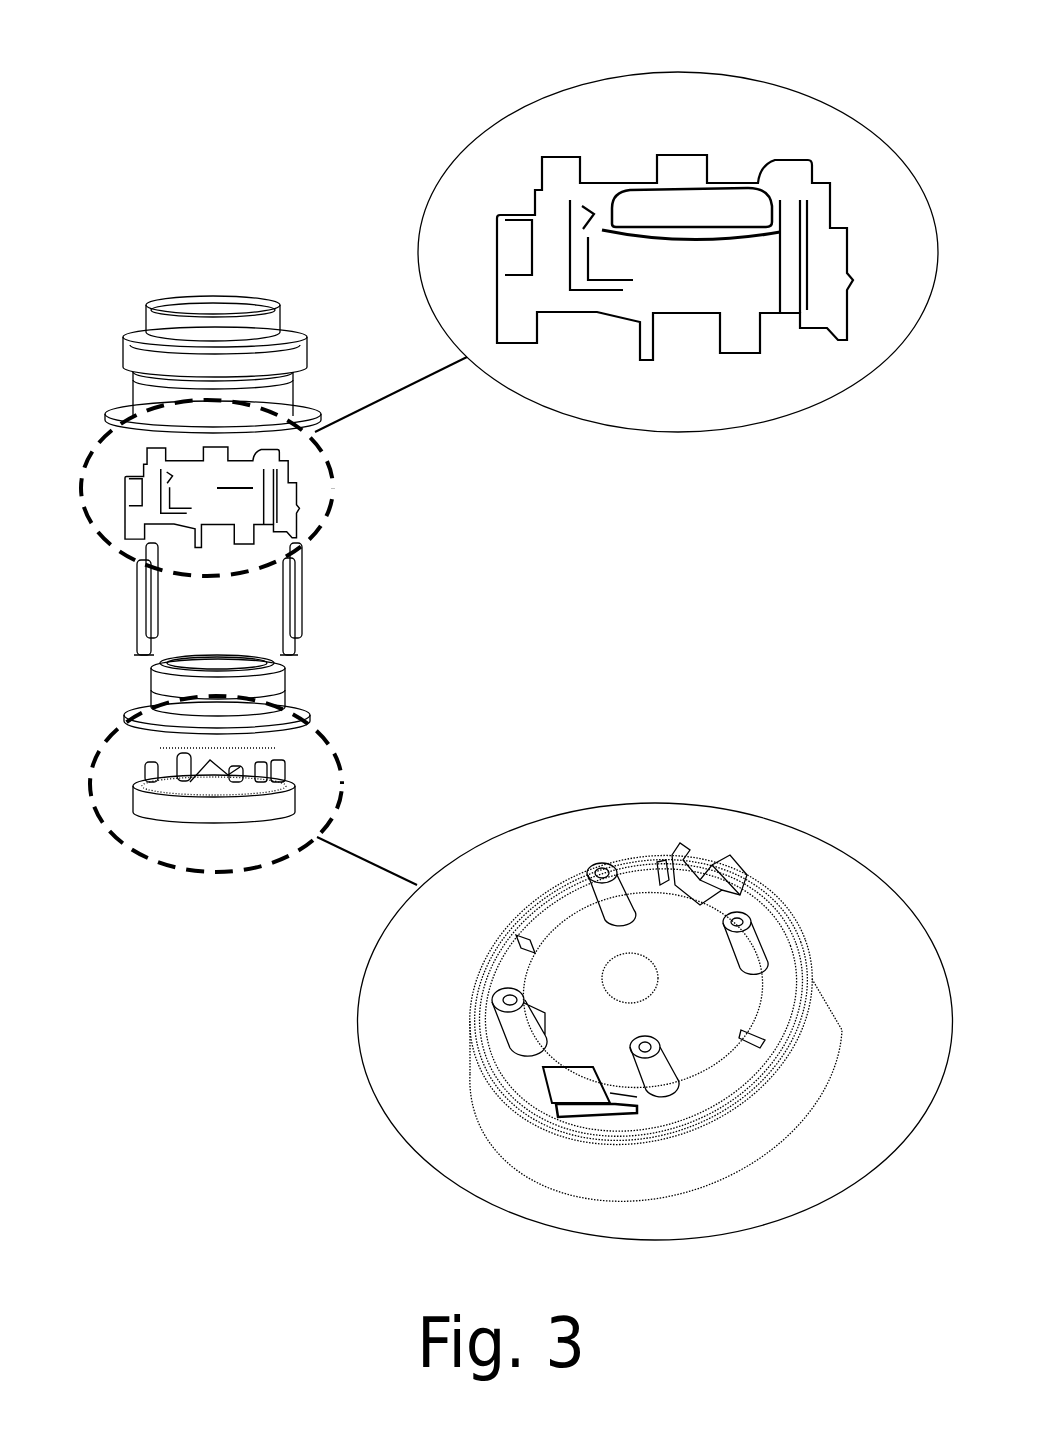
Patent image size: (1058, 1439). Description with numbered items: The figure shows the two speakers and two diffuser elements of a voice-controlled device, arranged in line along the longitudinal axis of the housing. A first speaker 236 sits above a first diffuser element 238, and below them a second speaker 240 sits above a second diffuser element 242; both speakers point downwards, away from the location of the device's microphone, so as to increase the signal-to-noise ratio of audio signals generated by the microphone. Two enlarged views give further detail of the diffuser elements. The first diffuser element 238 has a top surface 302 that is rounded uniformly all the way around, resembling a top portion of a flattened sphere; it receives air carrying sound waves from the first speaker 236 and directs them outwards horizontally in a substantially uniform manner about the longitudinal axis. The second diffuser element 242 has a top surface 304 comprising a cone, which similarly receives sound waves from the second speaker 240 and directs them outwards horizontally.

The first speaker 236 is at (172, 273).
The first diffuser element 238 is at (732, 117).
The second speaker 240 is at (323, 689).
The second diffuser element 242 is at (310, 770).
The top surface 302 is at (627, 193).
The top surface 304 is at (629, 948).